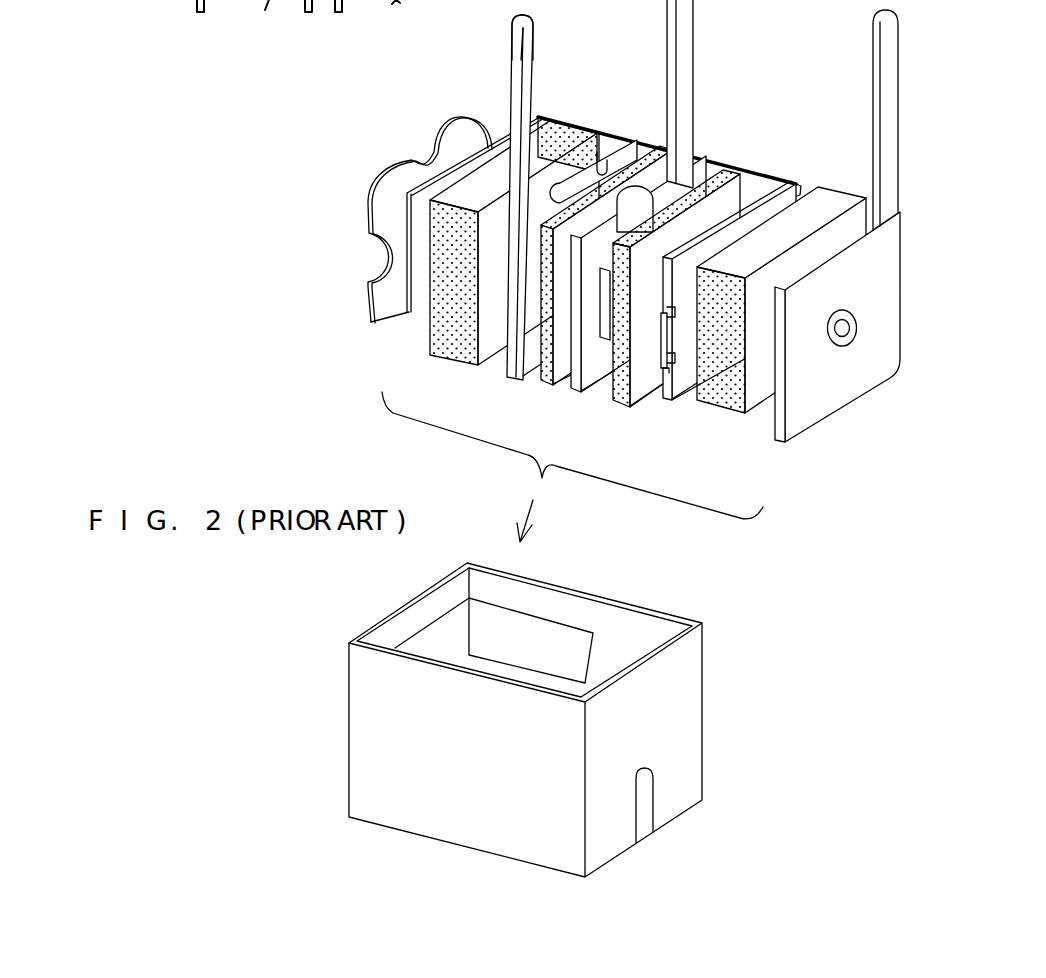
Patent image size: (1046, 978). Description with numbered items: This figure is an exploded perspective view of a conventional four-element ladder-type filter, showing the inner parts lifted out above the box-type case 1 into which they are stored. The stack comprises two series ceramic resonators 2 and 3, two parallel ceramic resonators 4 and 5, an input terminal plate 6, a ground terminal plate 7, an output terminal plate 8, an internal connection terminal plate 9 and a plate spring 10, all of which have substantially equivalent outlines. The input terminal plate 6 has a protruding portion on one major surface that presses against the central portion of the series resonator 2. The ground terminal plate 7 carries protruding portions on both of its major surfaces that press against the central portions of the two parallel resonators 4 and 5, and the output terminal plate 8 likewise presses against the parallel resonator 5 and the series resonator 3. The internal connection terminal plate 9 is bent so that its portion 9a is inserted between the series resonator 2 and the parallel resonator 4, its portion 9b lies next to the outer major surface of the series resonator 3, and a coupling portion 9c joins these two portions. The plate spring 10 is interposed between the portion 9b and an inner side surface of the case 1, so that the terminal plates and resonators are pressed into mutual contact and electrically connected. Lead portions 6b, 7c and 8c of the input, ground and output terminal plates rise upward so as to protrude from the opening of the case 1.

The box-type case 1 is at (693, 703).
The series ceramic resonator 2 is at (730, 427).
The series ceramic resonator 3 is at (452, 362).
The parallel ceramic resonator 4 is at (640, 388).
The parallel ceramic resonator 5 is at (550, 388).
The input terminal plate 6 is at (888, 285).
The lead portion 6b is at (897, 104).
The ground terminal plate 7 is at (593, 363).
The lead portion 7c is at (693, 25).
The output terminal plate 8 is at (517, 353).
The lead portion 8c is at (523, 57).
The internal connection terminal plate 9 is at (721, 148).
The portion of internal connection terminal plate 9a is at (760, 207).
The portion of internal connection terminal plate 9b is at (472, 157).
The coupling portion 9c is at (612, 131).
The plate spring 10 is at (378, 212).